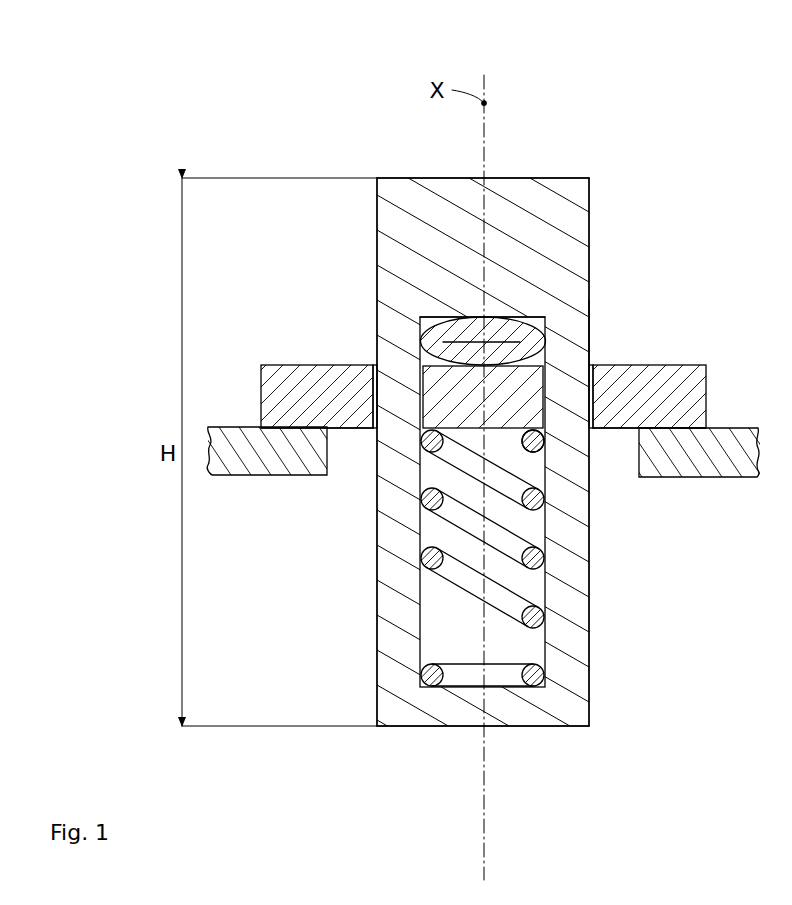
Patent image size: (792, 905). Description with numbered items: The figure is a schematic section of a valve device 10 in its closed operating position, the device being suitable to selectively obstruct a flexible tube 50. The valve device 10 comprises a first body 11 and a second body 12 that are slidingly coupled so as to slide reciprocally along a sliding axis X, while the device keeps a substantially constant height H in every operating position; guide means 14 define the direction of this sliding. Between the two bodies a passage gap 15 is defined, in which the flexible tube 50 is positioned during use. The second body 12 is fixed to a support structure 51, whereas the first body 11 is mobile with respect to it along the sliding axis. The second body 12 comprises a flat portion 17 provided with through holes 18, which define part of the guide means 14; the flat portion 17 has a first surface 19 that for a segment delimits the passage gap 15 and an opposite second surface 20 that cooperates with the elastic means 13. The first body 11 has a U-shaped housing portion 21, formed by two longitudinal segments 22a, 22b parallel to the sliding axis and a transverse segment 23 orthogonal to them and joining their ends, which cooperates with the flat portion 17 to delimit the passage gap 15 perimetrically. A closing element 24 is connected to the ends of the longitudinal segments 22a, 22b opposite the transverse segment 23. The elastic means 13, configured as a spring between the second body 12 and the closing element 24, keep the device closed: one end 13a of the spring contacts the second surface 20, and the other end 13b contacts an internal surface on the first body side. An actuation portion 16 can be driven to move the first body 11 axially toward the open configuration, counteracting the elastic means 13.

The valve device 10 is at (677, 238).
The first body 11 is at (558, 178).
The second body 12 is at (673, 363).
The elastic means 13 is at (462, 587).
The end of the spring 13a is at (533, 441).
The other end of the spring 13b is at (533, 675).
The guide means 14 is at (372, 433).
The passage gap 15 is at (525, 317).
The actuation portion 16 is at (548, 738).
The flat portion 17 is at (312, 392).
The through holes 18 is at (373, 392).
The first surface 19 is at (532, 367).
The second surface 20 is at (467, 429).
The housing portion 21 is at (453, 225).
The longitudinal segment 22a is at (401, 403).
The longitudinal segment 22b is at (569, 387).
The transverse segment 23 is at (516, 208).
The closing element 24 is at (450, 727).
The flexible tube 50 is at (457, 332).
The support structure 51 is at (237, 463).